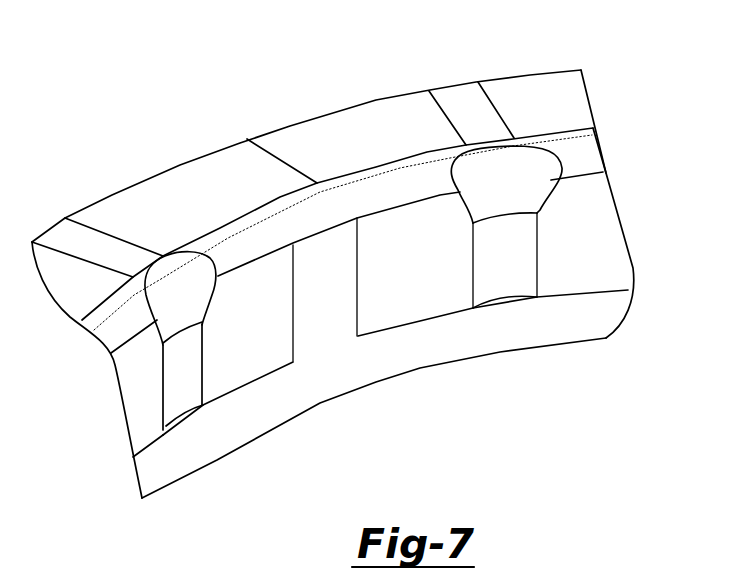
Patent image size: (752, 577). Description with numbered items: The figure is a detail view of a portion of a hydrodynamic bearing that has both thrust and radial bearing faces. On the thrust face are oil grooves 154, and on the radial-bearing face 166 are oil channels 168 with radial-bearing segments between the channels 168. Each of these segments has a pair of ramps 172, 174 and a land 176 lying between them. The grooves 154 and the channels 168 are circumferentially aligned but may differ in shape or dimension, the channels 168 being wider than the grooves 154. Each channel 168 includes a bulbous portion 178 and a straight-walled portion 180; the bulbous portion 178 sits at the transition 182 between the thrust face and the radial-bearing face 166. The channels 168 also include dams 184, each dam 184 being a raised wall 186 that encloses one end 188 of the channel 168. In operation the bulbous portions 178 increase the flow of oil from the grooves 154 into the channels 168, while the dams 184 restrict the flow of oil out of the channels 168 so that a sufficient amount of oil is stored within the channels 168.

The oil groove 154 is at (463, 106).
The radial-bearing face 166 is at (655, 203).
The oil channel 168 is at (569, 227).
The ramp 172 is at (410, 317).
The ramp 174 is at (493, 345).
The land 176 is at (370, 320).
The bulbous portion 178 is at (156, 271).
The straight-walled portion 180 is at (116, 408).
The transition 182 is at (236, 180).
The dam 184 is at (214, 453).
The raised wall 186 is at (540, 343).
The end 188 is at (232, 414).